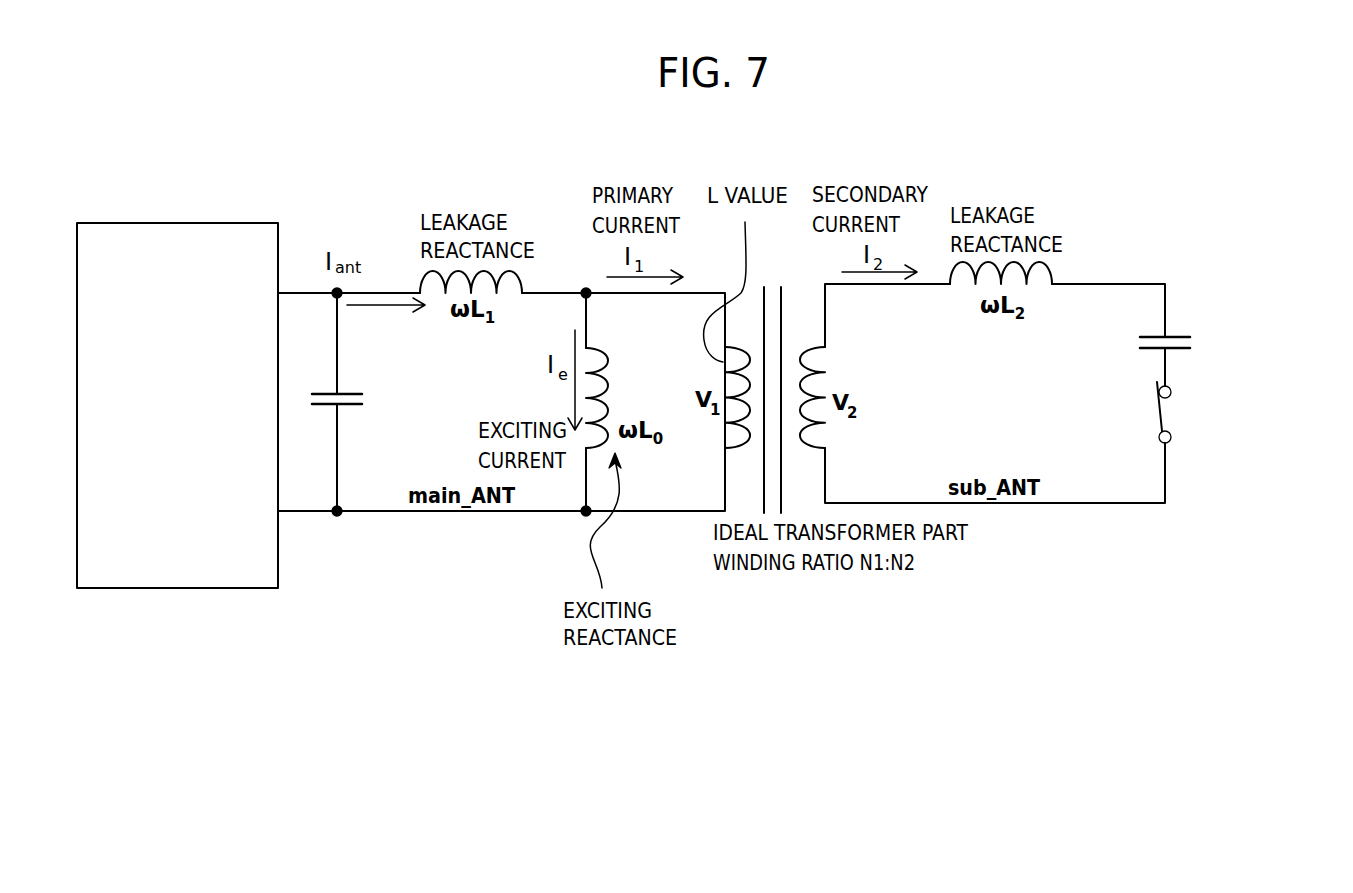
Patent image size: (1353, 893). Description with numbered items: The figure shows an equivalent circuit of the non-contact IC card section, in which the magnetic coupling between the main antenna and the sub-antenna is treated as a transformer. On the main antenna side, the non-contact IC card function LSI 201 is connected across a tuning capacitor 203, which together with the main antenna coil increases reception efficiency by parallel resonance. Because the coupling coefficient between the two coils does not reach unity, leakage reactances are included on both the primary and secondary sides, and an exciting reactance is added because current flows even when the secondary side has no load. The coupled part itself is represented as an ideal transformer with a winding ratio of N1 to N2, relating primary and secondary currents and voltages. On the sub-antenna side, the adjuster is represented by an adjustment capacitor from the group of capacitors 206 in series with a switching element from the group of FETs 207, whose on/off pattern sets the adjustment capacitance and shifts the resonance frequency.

The non-contact IC card function LSI 201 is at (278, 560).
The tuning capacitor 203 is at (323, 409).
The group of capacitors for adjustments 206 is at (1283, 357).
The group of switching elements (FETs) 207 is at (1225, 458).